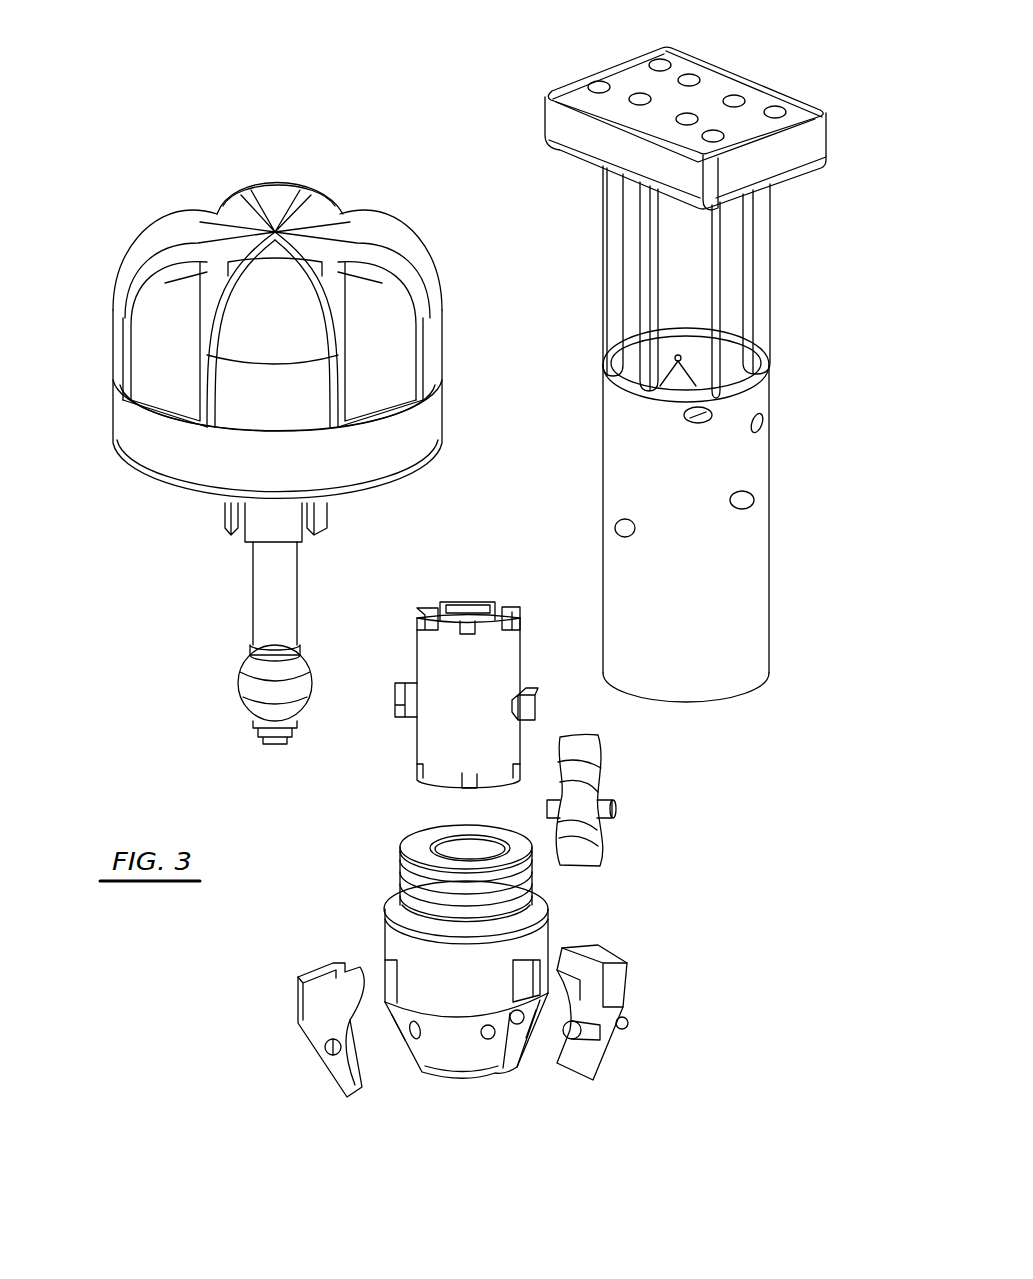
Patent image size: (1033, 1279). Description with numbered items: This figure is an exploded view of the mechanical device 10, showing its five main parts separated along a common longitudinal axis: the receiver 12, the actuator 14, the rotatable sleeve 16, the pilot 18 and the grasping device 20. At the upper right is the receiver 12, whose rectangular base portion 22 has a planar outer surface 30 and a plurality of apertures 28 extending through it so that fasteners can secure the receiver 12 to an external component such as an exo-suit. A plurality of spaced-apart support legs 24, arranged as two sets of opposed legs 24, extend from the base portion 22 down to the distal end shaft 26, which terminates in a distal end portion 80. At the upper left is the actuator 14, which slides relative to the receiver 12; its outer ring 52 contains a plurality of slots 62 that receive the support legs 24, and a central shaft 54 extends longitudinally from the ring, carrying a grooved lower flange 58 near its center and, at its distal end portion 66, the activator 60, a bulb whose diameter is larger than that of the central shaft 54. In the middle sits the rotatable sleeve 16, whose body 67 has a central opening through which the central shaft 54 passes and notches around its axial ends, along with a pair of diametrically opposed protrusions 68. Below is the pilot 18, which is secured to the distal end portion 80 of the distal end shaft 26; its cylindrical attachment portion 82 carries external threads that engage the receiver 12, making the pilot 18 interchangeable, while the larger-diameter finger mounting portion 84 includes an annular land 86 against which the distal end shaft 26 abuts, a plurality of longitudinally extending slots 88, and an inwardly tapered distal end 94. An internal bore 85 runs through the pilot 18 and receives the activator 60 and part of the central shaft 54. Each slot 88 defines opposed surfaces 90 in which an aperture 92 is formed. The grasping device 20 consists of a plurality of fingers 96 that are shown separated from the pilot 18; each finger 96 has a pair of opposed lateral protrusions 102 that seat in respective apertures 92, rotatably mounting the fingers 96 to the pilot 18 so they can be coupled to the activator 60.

The mechanical device 10 is at (243, 78).
The receiver 12 is at (717, 45).
The actuator 14 is at (165, 203).
The rotatable sleeve 16 is at (474, 586).
The pilot 18 is at (390, 843).
The grasping device 20 is at (290, 1060).
The base portion 22 is at (690, 175).
The support legs 24 is at (760, 290).
The distal end shaft 26 is at (753, 567).
The apertures 28 is at (777, 112).
The outer surface 30 is at (636, 80).
The outer ring 52 is at (143, 255).
The central shaft 54 is at (267, 588).
The lower flange 58 is at (228, 515).
The activator 60 is at (258, 692).
The slots 62 is at (185, 300).
The distal end portion 66 is at (275, 662).
The body 67 is at (495, 665).
The protrusions 68 is at (400, 690).
The distal end portion 80 is at (768, 662).
The attachment portion 82 is at (457, 888).
The finger mounting portion 84 is at (453, 962).
The internal bore 85 is at (457, 845).
The annular land 86 is at (530, 917).
The slots 88 is at (403, 1053).
The opposed surfaces 90 is at (502, 1070).
The aperture 92 is at (527, 1020).
The inwardly tapered distal end 94 is at (455, 1045).
The fingers 96 is at (604, 848).
The lateral protrusions 102 is at (633, 1020).